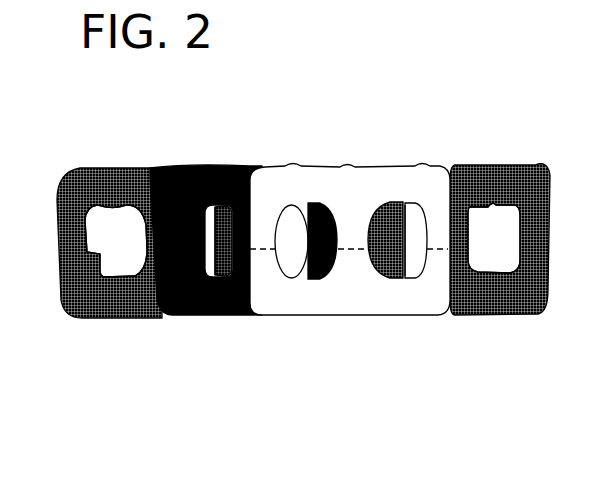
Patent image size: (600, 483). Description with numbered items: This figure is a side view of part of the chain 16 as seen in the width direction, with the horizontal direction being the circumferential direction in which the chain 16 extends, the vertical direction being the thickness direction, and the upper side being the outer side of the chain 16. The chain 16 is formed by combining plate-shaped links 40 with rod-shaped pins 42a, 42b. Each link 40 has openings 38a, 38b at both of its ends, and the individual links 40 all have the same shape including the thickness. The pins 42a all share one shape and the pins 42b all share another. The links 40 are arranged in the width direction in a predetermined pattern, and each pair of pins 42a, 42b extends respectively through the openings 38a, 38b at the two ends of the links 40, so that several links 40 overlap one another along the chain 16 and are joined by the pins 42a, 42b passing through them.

The chain 16 is at (320, 120).
The link 40 is at (100, 192).
The pin 42a is at (173, 290).
The pin 42b is at (228, 283).
The opening 38a is at (103, 272).
The opening 38b is at (475, 263).